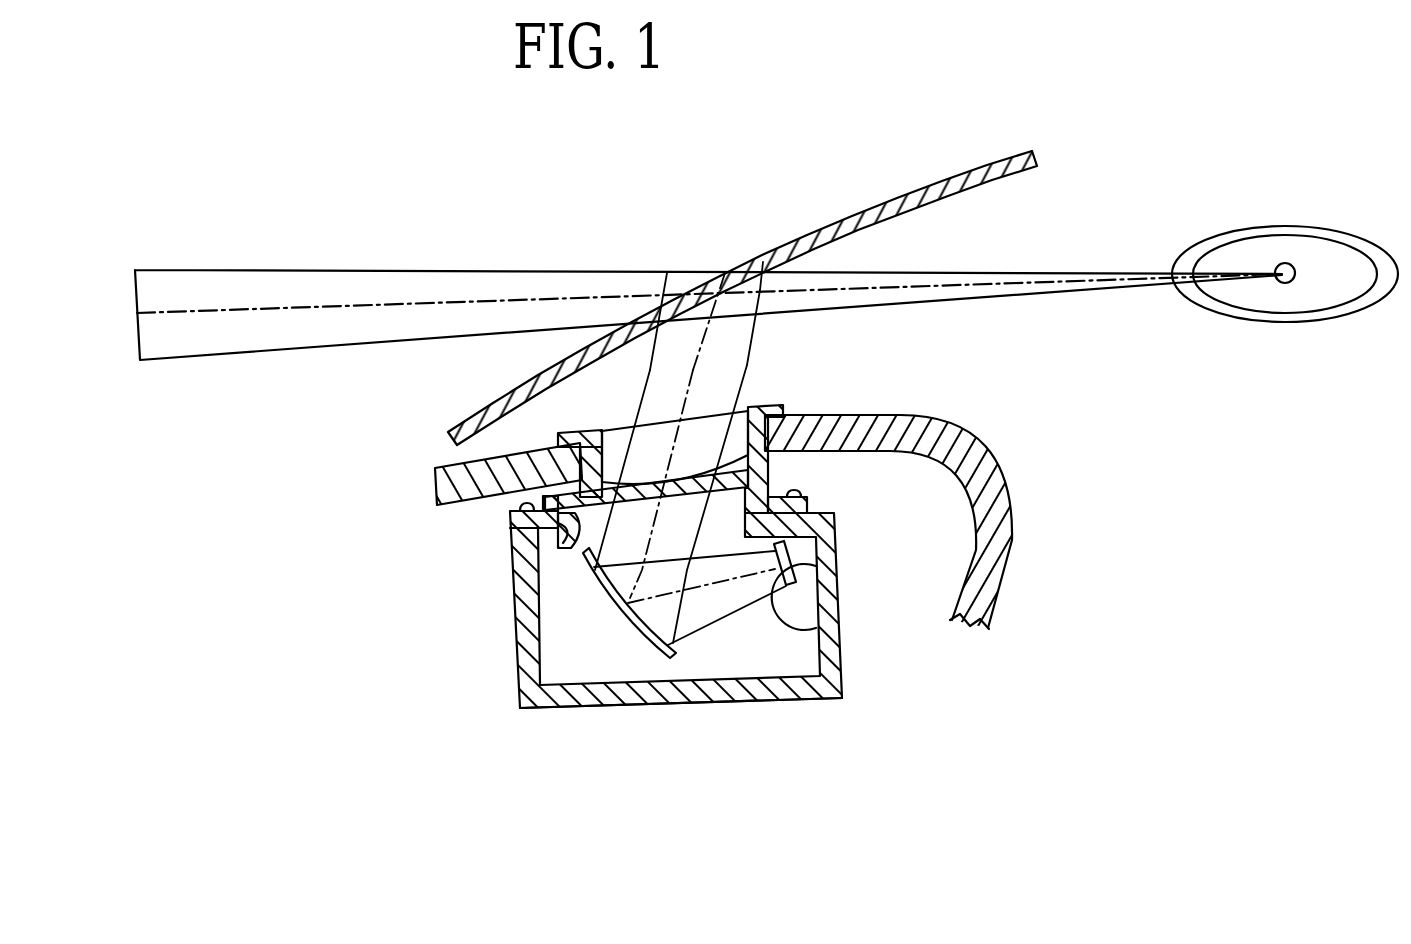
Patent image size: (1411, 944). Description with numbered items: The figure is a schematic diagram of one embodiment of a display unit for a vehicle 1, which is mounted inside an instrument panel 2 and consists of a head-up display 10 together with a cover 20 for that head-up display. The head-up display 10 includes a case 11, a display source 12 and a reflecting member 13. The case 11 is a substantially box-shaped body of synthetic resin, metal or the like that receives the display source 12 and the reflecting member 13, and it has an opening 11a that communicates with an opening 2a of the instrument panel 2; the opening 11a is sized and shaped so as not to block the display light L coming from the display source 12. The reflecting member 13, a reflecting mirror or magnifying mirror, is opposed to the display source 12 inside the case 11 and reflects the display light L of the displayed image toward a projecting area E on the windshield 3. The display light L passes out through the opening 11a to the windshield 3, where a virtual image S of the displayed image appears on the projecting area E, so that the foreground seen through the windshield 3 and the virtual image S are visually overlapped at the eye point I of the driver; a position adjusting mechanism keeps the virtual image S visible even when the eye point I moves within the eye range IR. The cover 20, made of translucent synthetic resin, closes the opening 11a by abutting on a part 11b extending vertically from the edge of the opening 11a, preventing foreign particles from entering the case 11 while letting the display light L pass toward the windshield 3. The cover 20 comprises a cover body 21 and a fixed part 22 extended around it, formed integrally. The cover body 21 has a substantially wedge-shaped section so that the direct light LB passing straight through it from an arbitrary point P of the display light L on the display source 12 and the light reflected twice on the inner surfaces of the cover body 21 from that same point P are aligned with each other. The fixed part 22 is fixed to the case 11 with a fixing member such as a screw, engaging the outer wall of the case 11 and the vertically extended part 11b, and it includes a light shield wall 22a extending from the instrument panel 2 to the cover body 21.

The display unit for a vehicle 1 is at (682, 733).
The head-up display 10 is at (827, 712).
The case 11 is at (512, 619).
The opening 11a is at (512, 562).
The vertically extended part 11b is at (512, 544).
The display source 12 is at (793, 563).
The reflecting member 13 is at (618, 608).
The arbitrary point P is at (770, 593).
The display light L is at (722, 593).
The direct light LB is at (650, 603).
The instrument panel 2 is at (972, 448).
The opening 2a is at (790, 420).
The cover 20 is at (703, 410).
The cover body 21 is at (633, 457).
The fixed part 22 is at (557, 440).
The light shield wall 22a is at (557, 412).
The windshield 3 is at (915, 189).
The virtual image S is at (137, 293).
The projecting area E is at (725, 273).
The eye range IR is at (1257, 227).
The eye point I is at (1288, 263).